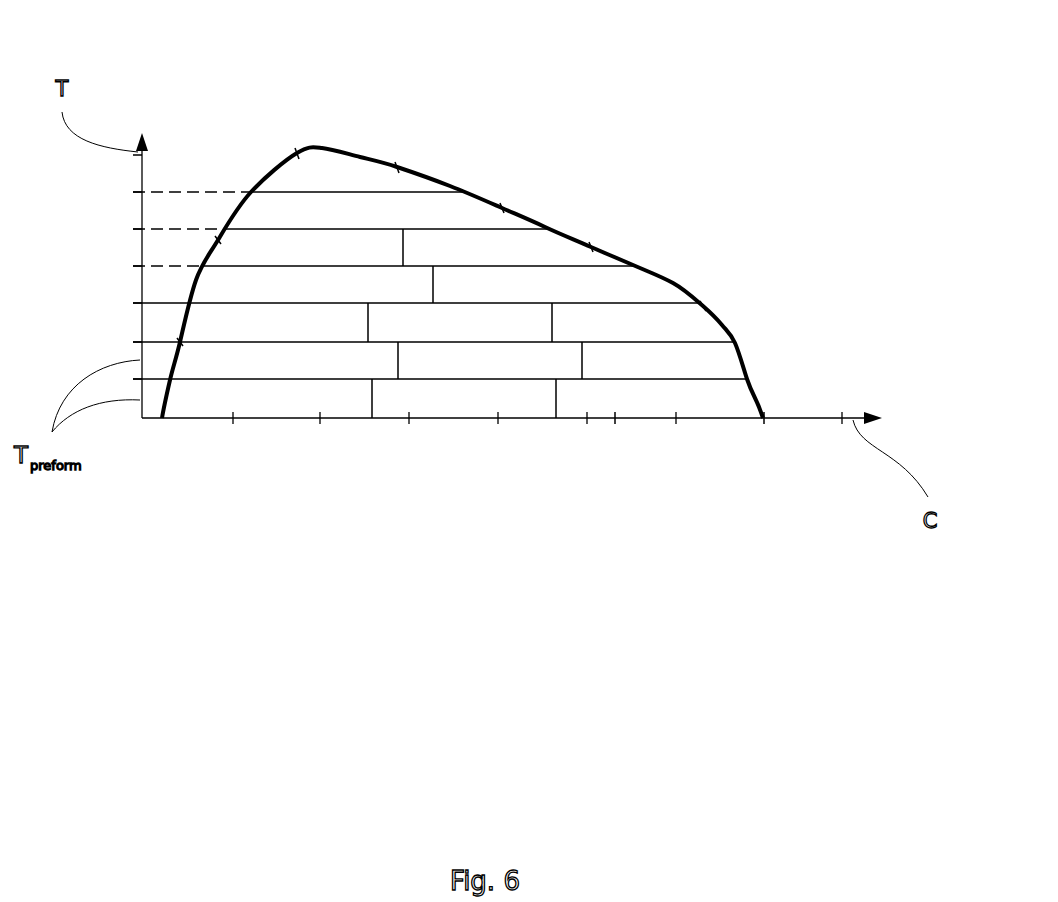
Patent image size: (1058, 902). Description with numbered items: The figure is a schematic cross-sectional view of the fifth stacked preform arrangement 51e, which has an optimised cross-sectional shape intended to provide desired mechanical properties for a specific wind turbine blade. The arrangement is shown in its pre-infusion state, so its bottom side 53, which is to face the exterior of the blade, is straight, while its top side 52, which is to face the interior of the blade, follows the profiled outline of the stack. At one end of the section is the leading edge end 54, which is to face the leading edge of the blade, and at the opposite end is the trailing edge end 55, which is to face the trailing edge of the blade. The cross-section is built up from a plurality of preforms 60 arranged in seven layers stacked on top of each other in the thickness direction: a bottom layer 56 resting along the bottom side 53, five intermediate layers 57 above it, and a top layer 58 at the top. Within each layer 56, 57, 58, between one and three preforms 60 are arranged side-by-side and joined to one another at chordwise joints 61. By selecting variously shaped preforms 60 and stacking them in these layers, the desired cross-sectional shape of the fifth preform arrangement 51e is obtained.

The fifth stacked preform arrangement 51e is at (287, 84).
The top side 52 is at (348, 152).
The bottom side 53 is at (615, 418).
The leading edge end 54 is at (830, 362).
The trailing edge end 55 is at (150, 284).
The bottom layer 56 is at (757, 393).
The intermediate layers 57 is at (505, 208).
The top layer 58 is at (420, 170).
The preforms 60 is at (320, 325).
The chordwise joints 61 is at (557, 402).